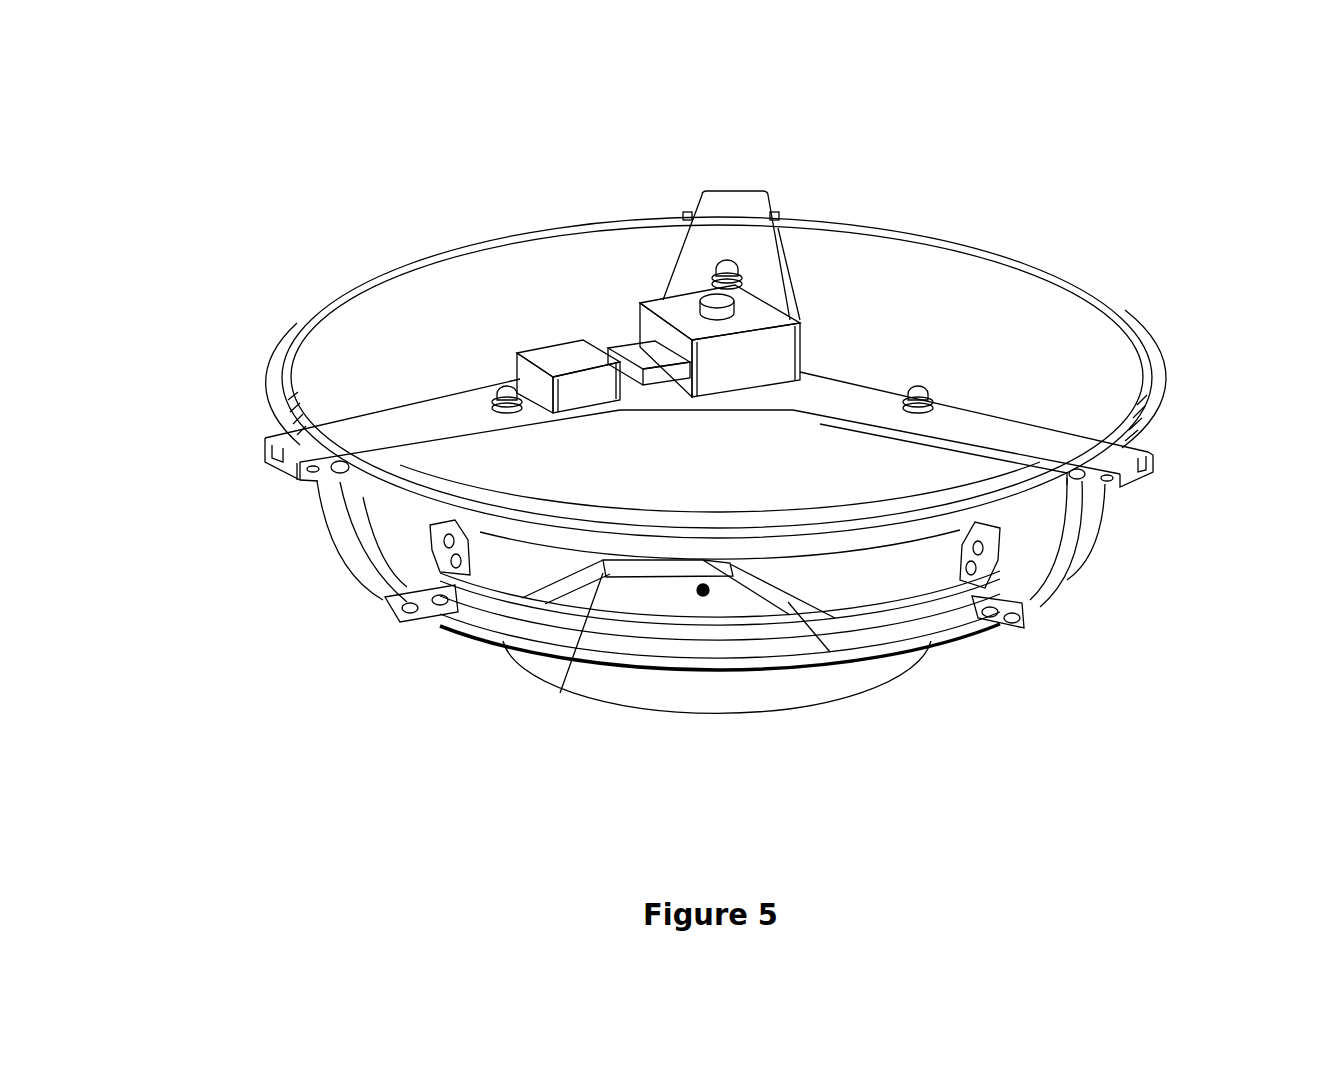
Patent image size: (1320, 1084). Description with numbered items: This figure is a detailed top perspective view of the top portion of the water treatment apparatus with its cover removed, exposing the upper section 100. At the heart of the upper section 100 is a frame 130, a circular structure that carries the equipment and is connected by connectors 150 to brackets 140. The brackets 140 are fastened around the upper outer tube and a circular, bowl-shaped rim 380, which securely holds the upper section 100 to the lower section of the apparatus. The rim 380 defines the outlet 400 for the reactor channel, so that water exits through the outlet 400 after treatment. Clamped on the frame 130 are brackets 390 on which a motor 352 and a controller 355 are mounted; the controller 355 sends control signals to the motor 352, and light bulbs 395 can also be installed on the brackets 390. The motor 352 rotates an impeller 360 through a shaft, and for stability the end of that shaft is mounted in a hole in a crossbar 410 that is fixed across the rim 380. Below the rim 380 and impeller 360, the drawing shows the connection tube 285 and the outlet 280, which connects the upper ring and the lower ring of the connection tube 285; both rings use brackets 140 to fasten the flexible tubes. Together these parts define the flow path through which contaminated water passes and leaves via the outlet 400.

The upper section 100 is at (997, 160).
The frame 130 is at (1149, 349).
The brackets 140 is at (932, 627).
The connectors 150 is at (350, 543).
The outlet 280 is at (680, 675).
The connection tube 285 is at (553, 660).
The motor 352 is at (655, 300).
The controller 355 is at (567, 362).
The impeller 360 is at (830, 652).
The rim 380 is at (393, 547).
The brackets 390 is at (725, 210).
The light bulbs 395 is at (498, 390).
The outlet 400 is at (705, 595).
The crossbar 410 is at (560, 693).